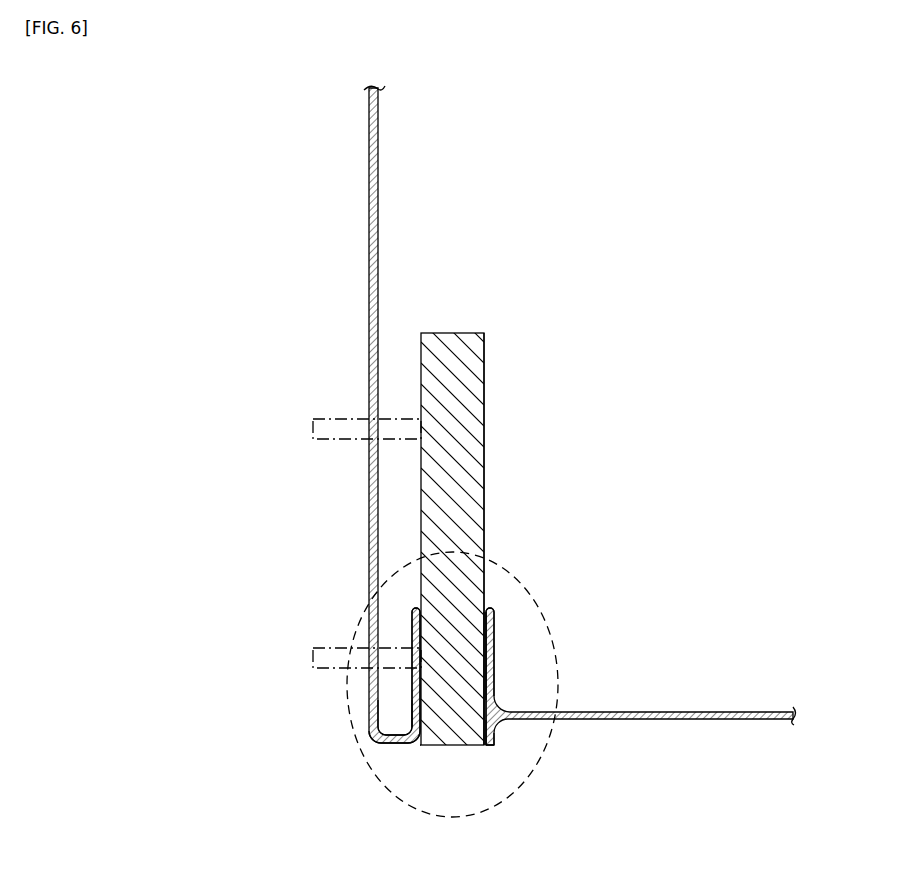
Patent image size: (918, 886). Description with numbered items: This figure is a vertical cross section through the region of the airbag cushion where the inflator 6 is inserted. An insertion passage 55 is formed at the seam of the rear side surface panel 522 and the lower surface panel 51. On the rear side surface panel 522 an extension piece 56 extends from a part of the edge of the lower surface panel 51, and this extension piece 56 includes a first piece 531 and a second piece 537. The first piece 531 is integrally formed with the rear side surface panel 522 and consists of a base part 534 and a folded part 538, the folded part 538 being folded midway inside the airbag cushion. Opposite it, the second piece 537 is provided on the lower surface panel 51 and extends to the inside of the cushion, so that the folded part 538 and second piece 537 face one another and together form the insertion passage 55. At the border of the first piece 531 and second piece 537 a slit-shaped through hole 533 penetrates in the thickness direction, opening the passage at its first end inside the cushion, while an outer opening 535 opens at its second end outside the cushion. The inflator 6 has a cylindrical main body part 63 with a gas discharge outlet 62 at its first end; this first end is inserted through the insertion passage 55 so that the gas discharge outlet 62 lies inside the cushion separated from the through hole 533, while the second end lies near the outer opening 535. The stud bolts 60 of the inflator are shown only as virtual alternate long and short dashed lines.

The inflator 6 is at (407, 388).
The lower surface panel 51 is at (710, 719).
The insertion passage 55 is at (419, 746).
The extension piece 56 is at (511, 658).
The stud bolts 60 is at (328, 648).
The gas discharge outlet 62 is at (452, 333).
The main body part 63 is at (484, 383).
The rear side surface panel 522 is at (370, 317).
The first piece 531 is at (391, 709).
The through hole 533 is at (492, 602).
The base part 534 is at (387, 743).
The outer opening 535 is at (500, 752).
The second piece 537 is at (497, 690).
The folded part 538 is at (411, 690).